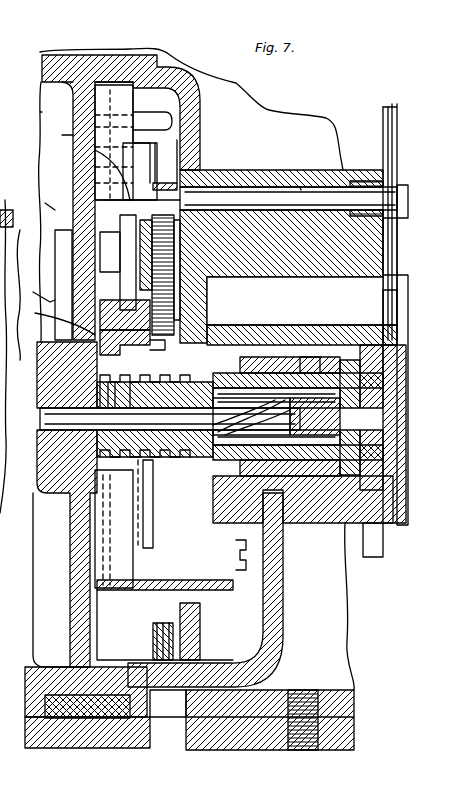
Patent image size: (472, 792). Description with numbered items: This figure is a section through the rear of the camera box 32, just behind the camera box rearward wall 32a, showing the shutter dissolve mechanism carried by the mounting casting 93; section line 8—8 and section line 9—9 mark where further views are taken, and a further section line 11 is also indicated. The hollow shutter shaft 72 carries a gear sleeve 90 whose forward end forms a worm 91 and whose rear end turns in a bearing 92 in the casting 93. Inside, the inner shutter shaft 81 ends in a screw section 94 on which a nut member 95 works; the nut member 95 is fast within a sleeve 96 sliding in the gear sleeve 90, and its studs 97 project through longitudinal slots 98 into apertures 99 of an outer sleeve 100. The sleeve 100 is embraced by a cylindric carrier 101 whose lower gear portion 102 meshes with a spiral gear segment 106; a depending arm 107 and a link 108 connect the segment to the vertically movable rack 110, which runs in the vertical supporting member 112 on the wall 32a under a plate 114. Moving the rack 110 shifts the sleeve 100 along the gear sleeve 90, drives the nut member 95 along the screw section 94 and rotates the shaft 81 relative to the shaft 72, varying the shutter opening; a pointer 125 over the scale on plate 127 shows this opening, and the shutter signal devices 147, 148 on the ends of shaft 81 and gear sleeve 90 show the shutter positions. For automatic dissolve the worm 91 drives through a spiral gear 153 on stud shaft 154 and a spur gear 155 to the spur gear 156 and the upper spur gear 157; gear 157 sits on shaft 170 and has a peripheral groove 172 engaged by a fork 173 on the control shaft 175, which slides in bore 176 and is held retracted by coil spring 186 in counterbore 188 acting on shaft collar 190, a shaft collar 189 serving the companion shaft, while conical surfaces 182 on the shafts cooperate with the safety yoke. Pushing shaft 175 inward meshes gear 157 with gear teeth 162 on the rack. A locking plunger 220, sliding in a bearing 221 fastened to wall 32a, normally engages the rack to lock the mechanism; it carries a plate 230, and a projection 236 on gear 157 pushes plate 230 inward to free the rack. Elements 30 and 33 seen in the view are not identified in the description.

The camera box 32 is at (52, 67).
The camera box rearward wall 32a is at (73, 135).
The mounting casting 93 is at (287, 325).
The section line 8— 8 is at (133, 113).
The vertical supporting member 112 is at (111, 150).
The rack 110 is at (80, 172).
The conical surfaces 182 is at (180, 187).
The section line 9— 9 is at (198, 147).
The plate 114 is at (193, 125).
The fork 173 is at (232, 190).
The peripheral groove 172 is at (245, 204).
The bore 176 is at (299, 186).
The coil spring 186 is at (363, 170).
The plate 127 is at (380, 117).
The pointer 125 is at (393, 107).
The shaft collar 190 is at (398, 224).
The shaft 170 is at (278, 278).
The spur gear 157 is at (250, 270).
The control shaft 175 is at (310, 245).
The counterbore 188 is at (357, 215).
The spur gear 156 is at (246, 335).
The cylindric carrier 101 is at (260, 335).
The bearing 92 is at (330, 345).
The shaft collar 189 is at (383, 308).
The shutter signal device 148 is at (383, 335).
The sleeve 100 is at (290, 411).
The studs 97 is at (298, 540).
The apertures 99 is at (310, 360).
The sleeve 96 is at (352, 417).
The inner shutter shaft 81 is at (44, 418).
The screw section 94 is at (251, 425).
The nut member 95 is at (295, 440).
The hollow shutter shaft 72 is at (40, 400).
The gear sleeve 90 is at (187, 462).
The worm 91 is at (133, 462).
The longitudinal slots 98 is at (222, 372).
The base 30 is at (28, 740).
The key 33 is at (62, 697).
The depending arm 107 is at (195, 625).
The link 108 is at (163, 623).
The section line 11 is at (125, 648).
The spiral gear segment 106 is at (247, 548).
The gear portion 102 is at (330, 492).
The shutter signal device 147 is at (282, 659).
The bearing 221 is at (55, 260).
The locking plunger 220 is at (12, 211).
The plate 230 is at (45, 203).
The spiral gear 153 is at (34, 291).
The stud shaft 154 is at (54, 319).
The gear teeth 162 is at (125, 225).
The projection 236 is at (124, 275).
The spur gear 155 is at (152, 360).